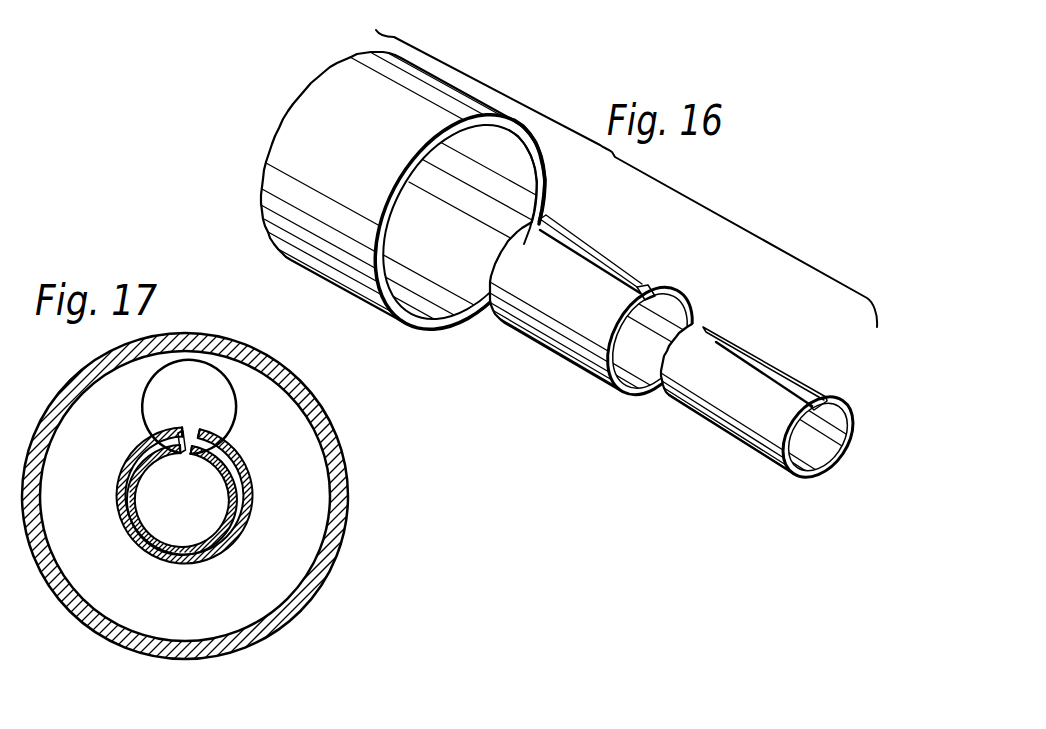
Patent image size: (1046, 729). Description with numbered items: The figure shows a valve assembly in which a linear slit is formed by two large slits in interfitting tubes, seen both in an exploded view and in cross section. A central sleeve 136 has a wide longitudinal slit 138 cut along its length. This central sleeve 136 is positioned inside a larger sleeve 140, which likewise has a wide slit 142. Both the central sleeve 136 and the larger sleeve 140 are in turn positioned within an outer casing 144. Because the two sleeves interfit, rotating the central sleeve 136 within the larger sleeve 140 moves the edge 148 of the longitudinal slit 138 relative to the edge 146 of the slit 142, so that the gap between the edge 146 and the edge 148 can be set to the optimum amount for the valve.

In FIG. 16, the central sleeve 136 is at (760, 433).
In FIG. 17, the central sleeve 136 is at (242, 503).
In FIG. 16, the longitudinal slit 138 is at (773, 370).
In FIG. 17, the longitudinal slit 138 is at (181, 454).
In FIG. 16, the larger sleeve 140 is at (568, 332).
In FIG. 17, the larger sleeve 140 is at (241, 537).
In FIG. 16, the slit 142 is at (641, 288).
In FIG. 17, the slit 142 is at (191, 429).
In FIG. 16, the outer casing 144 is at (364, 310).
In FIG. 17, the outer casing 144 is at (349, 457).
In FIG. 17, the edge 146 is at (181, 430).
In FIG. 17, the edge 148 is at (192, 452).